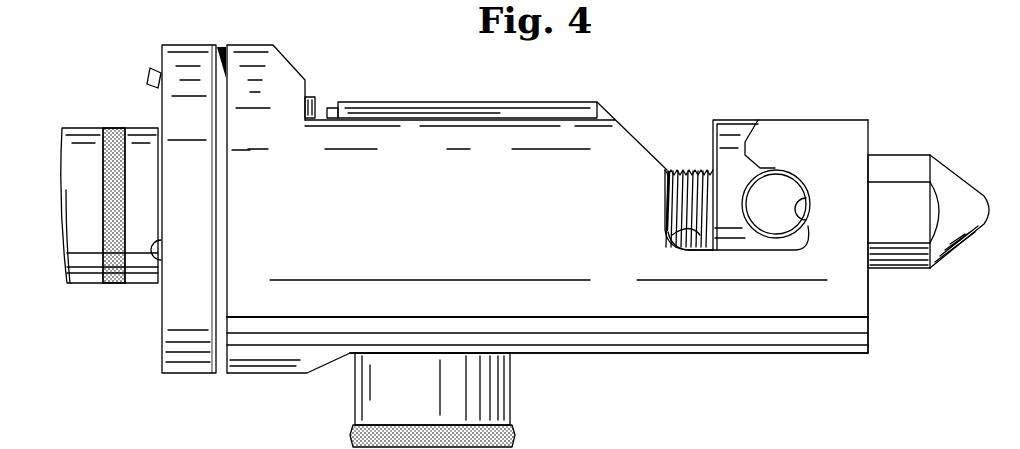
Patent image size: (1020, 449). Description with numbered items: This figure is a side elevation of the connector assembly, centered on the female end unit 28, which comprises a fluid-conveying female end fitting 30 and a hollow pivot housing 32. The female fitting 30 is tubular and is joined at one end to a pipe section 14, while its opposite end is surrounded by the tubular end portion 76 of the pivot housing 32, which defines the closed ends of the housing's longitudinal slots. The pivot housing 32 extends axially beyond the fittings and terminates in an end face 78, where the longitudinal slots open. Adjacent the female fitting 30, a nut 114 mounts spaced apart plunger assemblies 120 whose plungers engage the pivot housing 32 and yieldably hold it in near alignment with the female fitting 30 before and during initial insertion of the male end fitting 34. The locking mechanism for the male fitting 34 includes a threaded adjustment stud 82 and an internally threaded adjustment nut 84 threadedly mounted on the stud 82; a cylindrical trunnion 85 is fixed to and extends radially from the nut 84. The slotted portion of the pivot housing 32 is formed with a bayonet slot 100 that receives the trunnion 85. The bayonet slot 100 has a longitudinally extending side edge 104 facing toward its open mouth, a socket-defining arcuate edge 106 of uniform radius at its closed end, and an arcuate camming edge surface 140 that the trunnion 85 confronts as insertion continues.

The pipe section 14 is at (88, 287).
The female end fitting 30 is at (138, 287).
The plunger assemblies 120 is at (145, 81).
The nut 114 is at (165, 46).
The tubular end portion 76 is at (273, 48).
The pivot housing 32 is at (452, 242).
The male end fitting 34 is at (510, 103).
The threaded adjustment stud 82 is at (690, 170).
The adjustment nut 84 is at (726, 119).
The arcuate camming edge surface 140 is at (744, 153).
The bayonet slot 100 is at (796, 193).
The trunnion 85 is at (783, 186).
The socket-defining arcuate edge 106 is at (812, 216).
The longitudinally extending side edge 104 is at (672, 236).
The end face 78 is at (869, 318).
The female end unit 28 is at (748, 356).